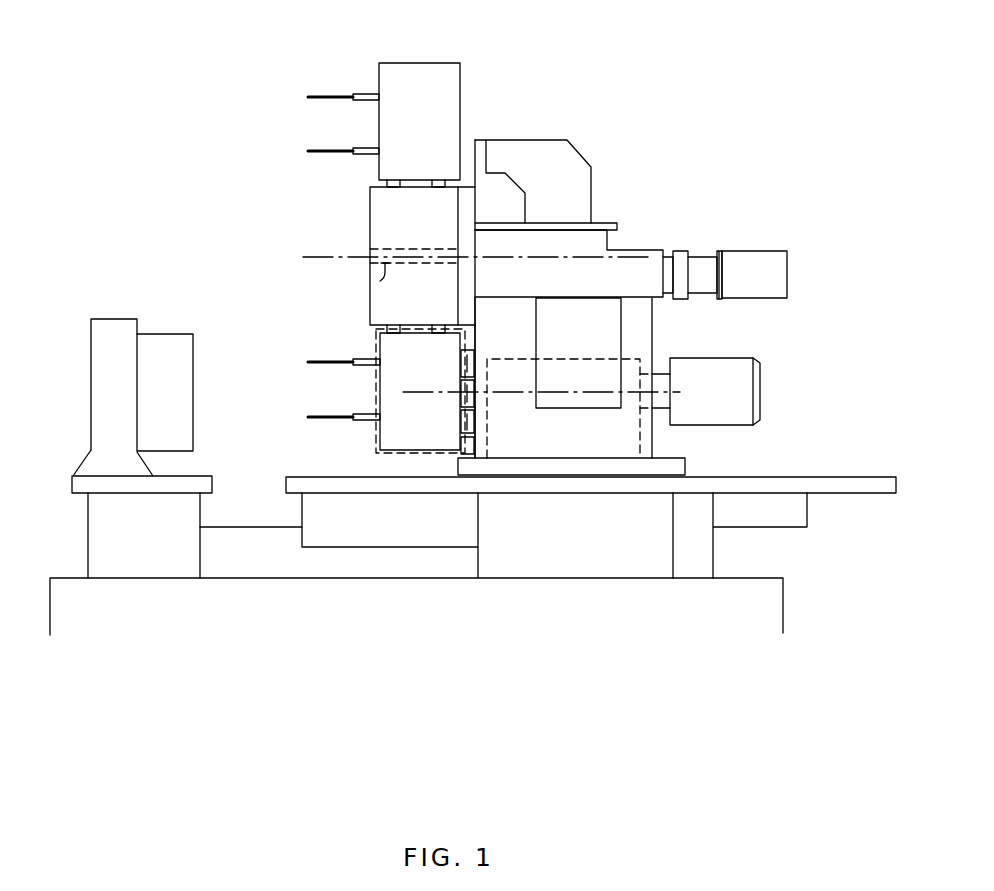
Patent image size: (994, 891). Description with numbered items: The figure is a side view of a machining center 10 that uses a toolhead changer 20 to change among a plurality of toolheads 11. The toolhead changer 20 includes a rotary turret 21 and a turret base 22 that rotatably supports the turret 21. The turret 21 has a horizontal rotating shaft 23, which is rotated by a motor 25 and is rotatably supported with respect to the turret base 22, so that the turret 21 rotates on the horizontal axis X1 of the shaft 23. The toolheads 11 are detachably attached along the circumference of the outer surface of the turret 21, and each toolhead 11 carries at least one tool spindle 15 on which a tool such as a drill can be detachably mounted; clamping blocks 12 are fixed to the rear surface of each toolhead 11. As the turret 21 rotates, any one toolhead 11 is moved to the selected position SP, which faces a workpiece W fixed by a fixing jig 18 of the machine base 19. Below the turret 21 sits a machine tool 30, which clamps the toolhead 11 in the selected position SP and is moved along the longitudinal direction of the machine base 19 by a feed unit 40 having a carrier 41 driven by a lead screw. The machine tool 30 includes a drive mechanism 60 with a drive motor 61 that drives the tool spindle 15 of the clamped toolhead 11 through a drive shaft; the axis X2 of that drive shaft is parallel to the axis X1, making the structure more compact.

The machining center 10 is at (201, 30).
The toolhead 11 is at (427, 68).
The clamping block 12 is at (476, 430).
The tool spindle 15 is at (358, 92).
The fixing jig 18 is at (262, 563).
The machine base 19 is at (110, 318).
The workpiece W is at (166, 334).
The toolhead changer 20 is at (578, 147).
The rotary turret 21 is at (372, 200).
The turret base 22 is at (583, 186).
The rotating shaft 23 is at (370, 283).
The motor 25 is at (747, 260).
The machine tool 30 is at (640, 437).
The feed unit 40 is at (764, 474).
The carrier 41 is at (683, 470).
The drive mechanism 60 is at (757, 384).
The drive motor 61 is at (737, 363).
The selected position SP is at (405, 455).
The axis of the shaft X1 is at (313, 258).
The axis of the drive shaft X2 is at (598, 395).